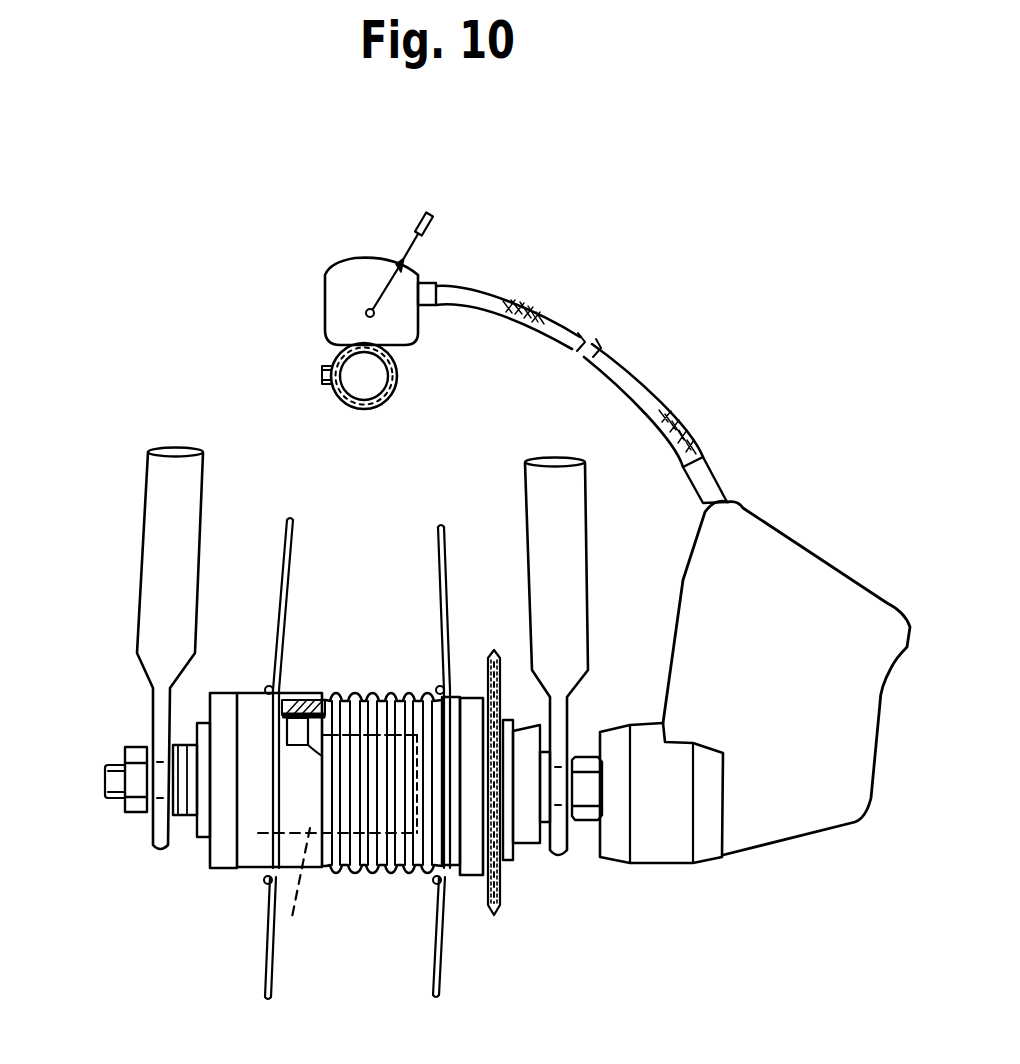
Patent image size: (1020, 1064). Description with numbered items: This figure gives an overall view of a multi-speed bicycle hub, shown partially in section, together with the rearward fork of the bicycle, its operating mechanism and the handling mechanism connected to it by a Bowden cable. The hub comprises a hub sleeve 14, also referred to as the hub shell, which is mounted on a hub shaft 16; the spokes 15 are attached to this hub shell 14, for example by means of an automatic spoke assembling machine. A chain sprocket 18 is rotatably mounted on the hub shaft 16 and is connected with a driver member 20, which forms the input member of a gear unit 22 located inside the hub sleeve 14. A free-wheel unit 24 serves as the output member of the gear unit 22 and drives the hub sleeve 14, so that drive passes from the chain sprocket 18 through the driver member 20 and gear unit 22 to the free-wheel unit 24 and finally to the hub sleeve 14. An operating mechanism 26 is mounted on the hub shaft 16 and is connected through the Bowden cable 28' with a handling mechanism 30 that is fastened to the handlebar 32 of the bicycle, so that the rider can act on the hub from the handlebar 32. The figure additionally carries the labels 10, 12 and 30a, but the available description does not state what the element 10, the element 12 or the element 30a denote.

The fork blade 10 is at (158, 492).
The hub body 12 is at (354, 870).
The hub sleeve 14 is at (378, 692).
The spokes 15 is at (440, 973).
The hub shaft 16 is at (108, 795).
The chain sprocket 18 is at (498, 910).
The driver member 20 is at (523, 847).
The gear unit 22 is at (309, 898).
The free-wheel unit 24 is at (295, 733).
The operating mechanism 26 is at (735, 857).
The Bowden cable 28' is at (596, 394).
The handling mechanism 30 is at (340, 281).
The switch lever 30a is at (424, 230).
The handlebar 32 is at (384, 367).